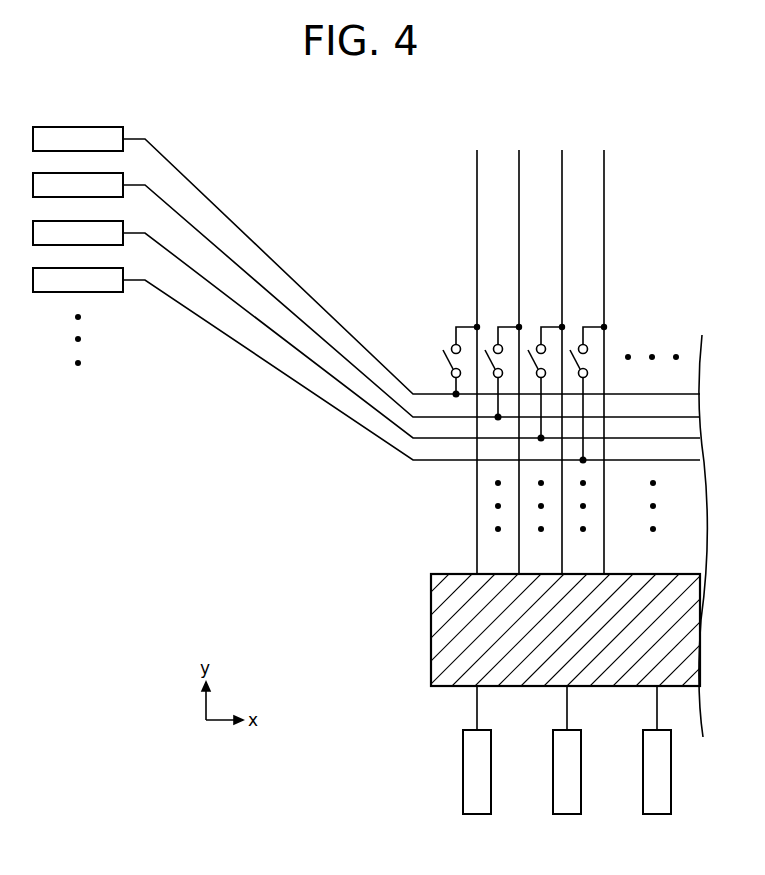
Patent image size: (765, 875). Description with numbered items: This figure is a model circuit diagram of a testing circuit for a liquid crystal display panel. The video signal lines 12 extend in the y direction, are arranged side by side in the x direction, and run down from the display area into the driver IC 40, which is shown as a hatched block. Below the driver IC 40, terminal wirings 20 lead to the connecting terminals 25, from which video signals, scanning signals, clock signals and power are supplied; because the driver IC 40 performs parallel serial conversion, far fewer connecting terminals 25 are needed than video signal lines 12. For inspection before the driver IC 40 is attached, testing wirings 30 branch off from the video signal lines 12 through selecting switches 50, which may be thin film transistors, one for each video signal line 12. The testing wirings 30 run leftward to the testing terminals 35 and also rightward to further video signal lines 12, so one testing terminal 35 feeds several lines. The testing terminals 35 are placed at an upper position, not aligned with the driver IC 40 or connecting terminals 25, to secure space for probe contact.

The video signal lines 12 is at (477, 193).
The testing wirings 30 is at (295, 281).
The testing terminals 35 is at (110, 291).
The selecting switches 50 is at (440, 363).
The driver IC 40 is at (431, 623).
The terminal wirings 20 is at (477, 709).
The connecting terminals 25 is at (463, 769).